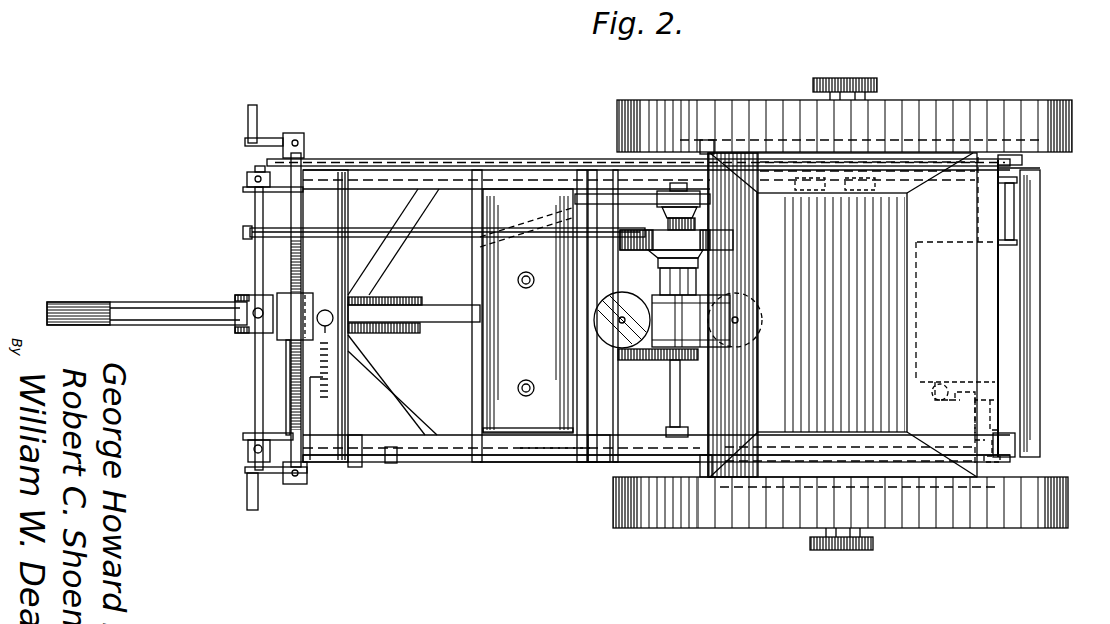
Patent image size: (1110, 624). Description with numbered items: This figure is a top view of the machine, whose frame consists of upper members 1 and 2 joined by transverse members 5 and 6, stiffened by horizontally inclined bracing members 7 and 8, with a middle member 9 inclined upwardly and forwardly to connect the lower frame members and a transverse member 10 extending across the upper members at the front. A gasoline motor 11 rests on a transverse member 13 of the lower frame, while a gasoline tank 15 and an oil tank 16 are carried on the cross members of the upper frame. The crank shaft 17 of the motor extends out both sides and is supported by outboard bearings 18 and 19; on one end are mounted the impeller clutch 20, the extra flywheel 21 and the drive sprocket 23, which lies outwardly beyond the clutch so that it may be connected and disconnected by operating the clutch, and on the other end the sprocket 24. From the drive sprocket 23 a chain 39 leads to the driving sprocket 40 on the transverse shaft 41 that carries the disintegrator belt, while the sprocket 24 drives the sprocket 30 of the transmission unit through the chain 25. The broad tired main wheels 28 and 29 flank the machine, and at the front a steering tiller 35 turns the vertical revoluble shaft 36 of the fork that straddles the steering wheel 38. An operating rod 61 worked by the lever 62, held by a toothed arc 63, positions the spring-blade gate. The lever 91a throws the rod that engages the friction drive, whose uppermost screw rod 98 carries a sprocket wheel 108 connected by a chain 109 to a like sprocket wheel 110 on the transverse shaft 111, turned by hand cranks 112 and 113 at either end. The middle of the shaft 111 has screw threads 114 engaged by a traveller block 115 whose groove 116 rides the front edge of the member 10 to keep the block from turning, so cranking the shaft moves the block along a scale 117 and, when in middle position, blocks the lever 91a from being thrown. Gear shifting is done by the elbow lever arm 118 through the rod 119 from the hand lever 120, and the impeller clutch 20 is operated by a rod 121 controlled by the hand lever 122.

The upper frame member 1 is at (456, 456).
The upper frame member 2 is at (418, 178).
The transverse member 5 is at (472, 350).
The transverse member 6 is at (1032, 316).
The bracing member 7 is at (372, 263).
The bracing member 8 is at (380, 376).
The middle member 9 is at (443, 310).
The transverse member 10 is at (336, 409).
The gasoline motor 11 is at (657, 352).
The transverse member 13 is at (602, 462).
The gasoline tank 15 is at (495, 259).
The oil tank 16 is at (490, 393).
The crank shaft 17 is at (675, 395).
The outboard bearing 18 is at (689, 427).
The outboard bearing 19 is at (660, 207).
The impeller clutch 20 is at (655, 245).
The extra flywheel 21 is at (676, 234).
The drive sprocket 23 is at (690, 152).
The sprocket 24 is at (666, 455).
The chain 25 is at (757, 477).
The broad tired wheel 28 is at (783, 518).
The broad tired wheel 29 is at (923, 100).
The sprocket 30 is at (1035, 442).
The steering tiller 35 is at (92, 322).
The vertical revoluble shaft 36 is at (322, 385).
The steering wheel 38 is at (410, 297).
The chain 39 is at (736, 200).
The driving sprocket 40 is at (812, 176).
The transverse shaft 41 is at (858, 176).
The operating rod 61 is at (505, 462).
The lever 62 is at (353, 467).
The toothed arc 63 is at (390, 463).
The lever 91a is at (255, 330).
The screw rod 98 is at (1010, 217).
The sprocket wheel 108 is at (1025, 160).
The chain 109 is at (537, 159).
The sprocket wheel 110 is at (304, 160).
The transverse shaft 111 is at (255, 207).
The hand crank 112 is at (258, 497).
The hand crank 113 is at (257, 112).
The screw threads 114 is at (292, 370).
The traveller block 115 is at (295, 316).
The groove 116 is at (310, 292).
The scale 117 is at (290, 401).
The elbow lever arm 118 is at (937, 385).
The rod 119 is at (560, 462).
The hand lever 120 is at (248, 450).
The rod 121 is at (361, 228).
The hand lever 122 is at (243, 232).